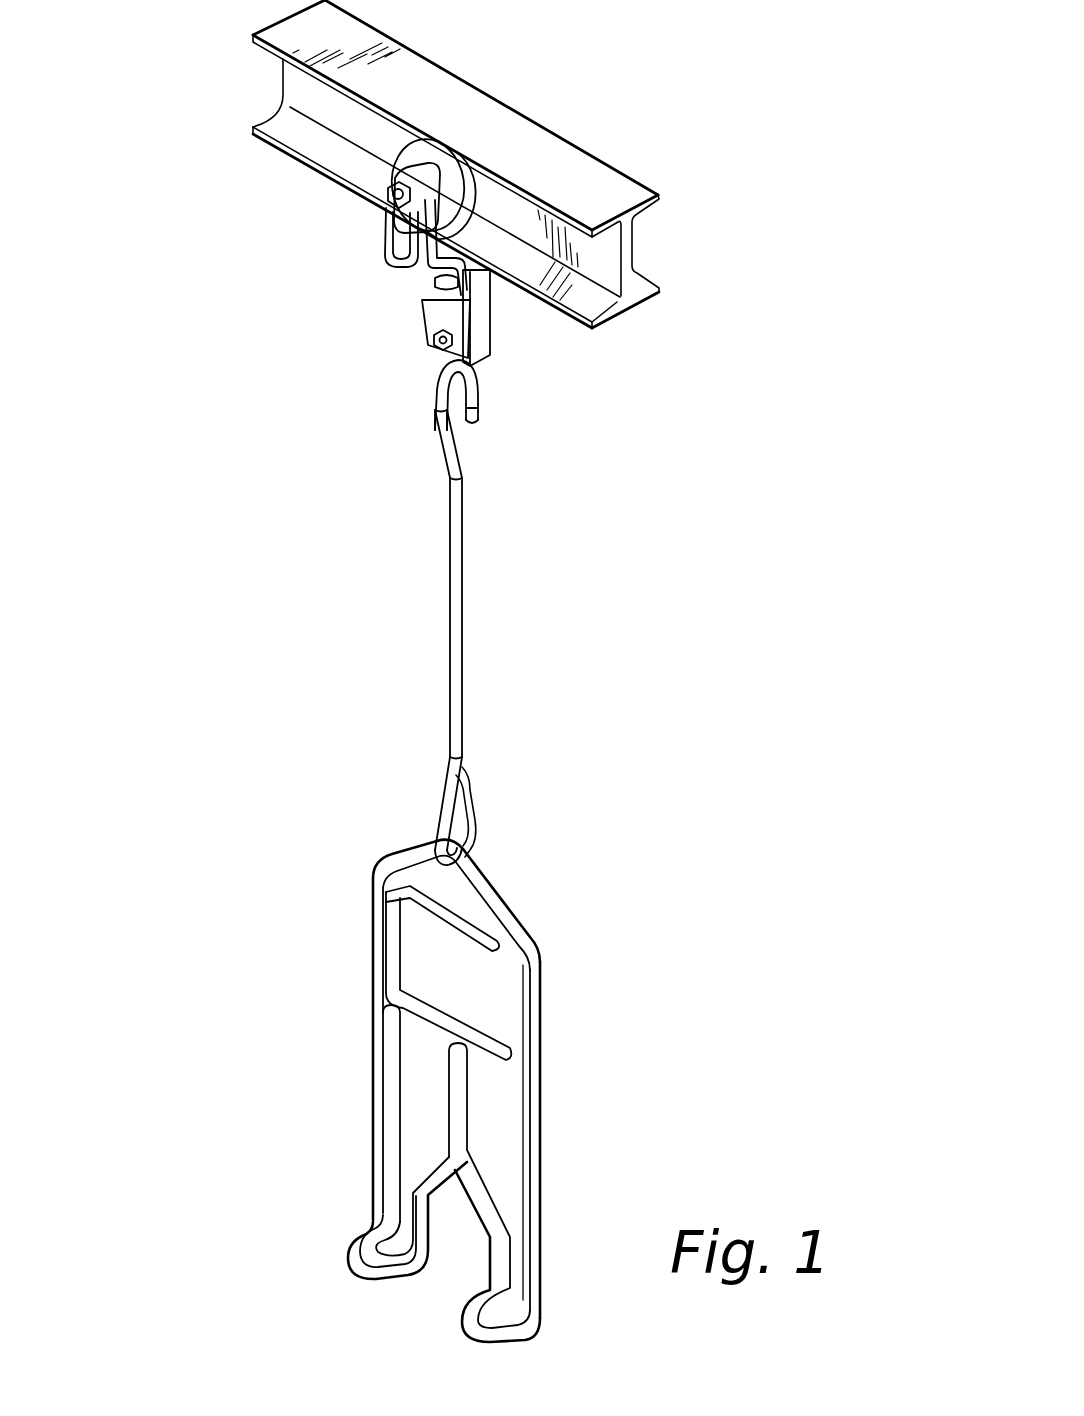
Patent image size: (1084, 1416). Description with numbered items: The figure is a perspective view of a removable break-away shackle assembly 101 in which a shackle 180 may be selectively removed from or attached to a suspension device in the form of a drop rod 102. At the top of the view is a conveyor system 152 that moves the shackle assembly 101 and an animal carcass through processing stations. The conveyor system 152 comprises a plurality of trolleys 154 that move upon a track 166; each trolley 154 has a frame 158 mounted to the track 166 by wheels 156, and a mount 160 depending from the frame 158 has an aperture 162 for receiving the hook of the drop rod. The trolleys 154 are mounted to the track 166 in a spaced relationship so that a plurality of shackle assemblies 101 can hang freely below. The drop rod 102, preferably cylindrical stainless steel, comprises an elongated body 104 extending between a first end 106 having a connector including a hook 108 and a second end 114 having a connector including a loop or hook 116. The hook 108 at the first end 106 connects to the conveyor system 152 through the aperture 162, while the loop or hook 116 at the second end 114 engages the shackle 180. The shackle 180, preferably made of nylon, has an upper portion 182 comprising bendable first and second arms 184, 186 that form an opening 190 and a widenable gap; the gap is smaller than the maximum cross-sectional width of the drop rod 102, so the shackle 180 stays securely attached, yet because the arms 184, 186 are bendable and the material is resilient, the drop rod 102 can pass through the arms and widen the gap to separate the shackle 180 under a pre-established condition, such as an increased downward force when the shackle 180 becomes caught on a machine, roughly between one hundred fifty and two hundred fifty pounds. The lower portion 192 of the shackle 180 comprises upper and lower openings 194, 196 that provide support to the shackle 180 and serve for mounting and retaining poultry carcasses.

The removable break-away shackle assembly 101 is at (618, 646).
The drop rod 102 is at (372, 640).
The elongated body 104 is at (463, 638).
The first end 106 is at (466, 480).
The hook 108 is at (443, 437).
The second end 114 is at (463, 753).
The loop or hook 116 is at (441, 797).
The conveyor system 152 is at (350, 297).
The trolley 154 is at (494, 348).
The wheels 156 is at (460, 162).
The frame 158 is at (382, 247).
The mount 160 is at (430, 363).
The aperture 162 is at (486, 406).
The track 166 is at (580, 142).
The shackle 180 is at (310, 1036).
The upper portion 182 is at (373, 874).
The first arm 184 is at (432, 845).
The second arm 186 is at (482, 860).
The opening 190 is at (497, 912).
The lower portion 192 is at (542, 1020).
The upper opening 194 is at (397, 957).
The lower opening 196 is at (400, 1062).